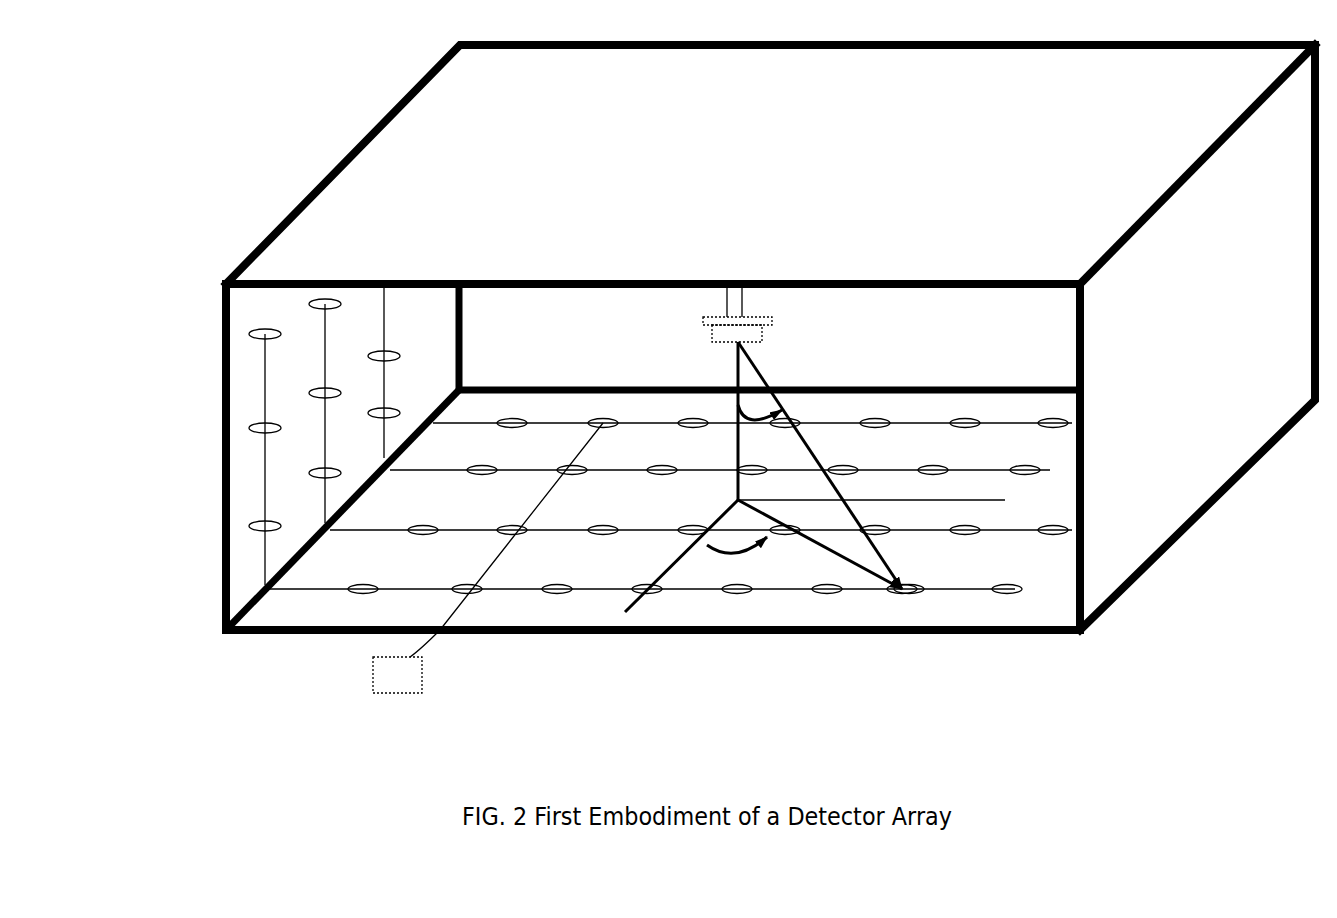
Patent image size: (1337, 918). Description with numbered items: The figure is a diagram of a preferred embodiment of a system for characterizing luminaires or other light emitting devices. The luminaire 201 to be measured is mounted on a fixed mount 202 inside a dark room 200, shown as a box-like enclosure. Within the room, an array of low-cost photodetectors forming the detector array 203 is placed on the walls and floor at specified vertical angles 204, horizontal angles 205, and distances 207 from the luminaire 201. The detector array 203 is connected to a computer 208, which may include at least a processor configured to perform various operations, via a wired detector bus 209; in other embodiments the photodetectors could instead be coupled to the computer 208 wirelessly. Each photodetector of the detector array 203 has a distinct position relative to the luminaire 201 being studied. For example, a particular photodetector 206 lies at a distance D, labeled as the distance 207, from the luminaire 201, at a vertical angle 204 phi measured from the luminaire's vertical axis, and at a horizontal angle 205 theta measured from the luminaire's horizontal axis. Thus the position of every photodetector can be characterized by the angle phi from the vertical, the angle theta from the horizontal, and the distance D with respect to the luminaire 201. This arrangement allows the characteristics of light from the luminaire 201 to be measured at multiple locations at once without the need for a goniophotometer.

The dark room 200 is at (207, 313).
The luminaire 201 is at (762, 338).
The fixed mount 202 is at (772, 317).
The detector array 203 is at (403, 547).
The vertical angle 204 is at (730, 368).
The horizontal angle 205 is at (722, 557).
The photodetector 206 is at (885, 597).
The distance 207 is at (810, 447).
The computer 208 is at (361, 709).
The detector bus 209 is at (478, 560).